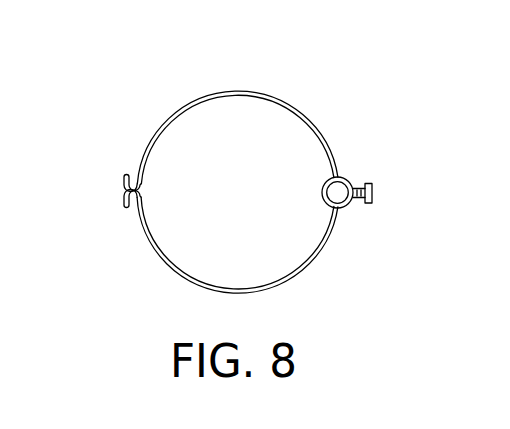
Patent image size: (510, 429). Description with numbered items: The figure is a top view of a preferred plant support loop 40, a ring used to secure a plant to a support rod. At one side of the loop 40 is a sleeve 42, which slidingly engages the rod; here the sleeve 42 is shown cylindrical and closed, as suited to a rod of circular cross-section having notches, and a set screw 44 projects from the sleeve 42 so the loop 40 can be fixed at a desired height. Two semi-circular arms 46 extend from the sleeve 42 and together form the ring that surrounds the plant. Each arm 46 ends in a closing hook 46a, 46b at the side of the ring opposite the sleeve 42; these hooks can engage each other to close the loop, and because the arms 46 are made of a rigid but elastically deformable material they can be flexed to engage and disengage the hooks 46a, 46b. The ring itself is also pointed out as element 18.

The plant support loop 40 is at (308, 288).
The ring 18 is at (325, 248).
The semi-circular arms 46 is at (283, 100).
The closing hook 46a is at (123, 183).
The closing hook 46b is at (125, 202).
The sleeve 42 is at (350, 178).
The set screw 44 is at (373, 197).